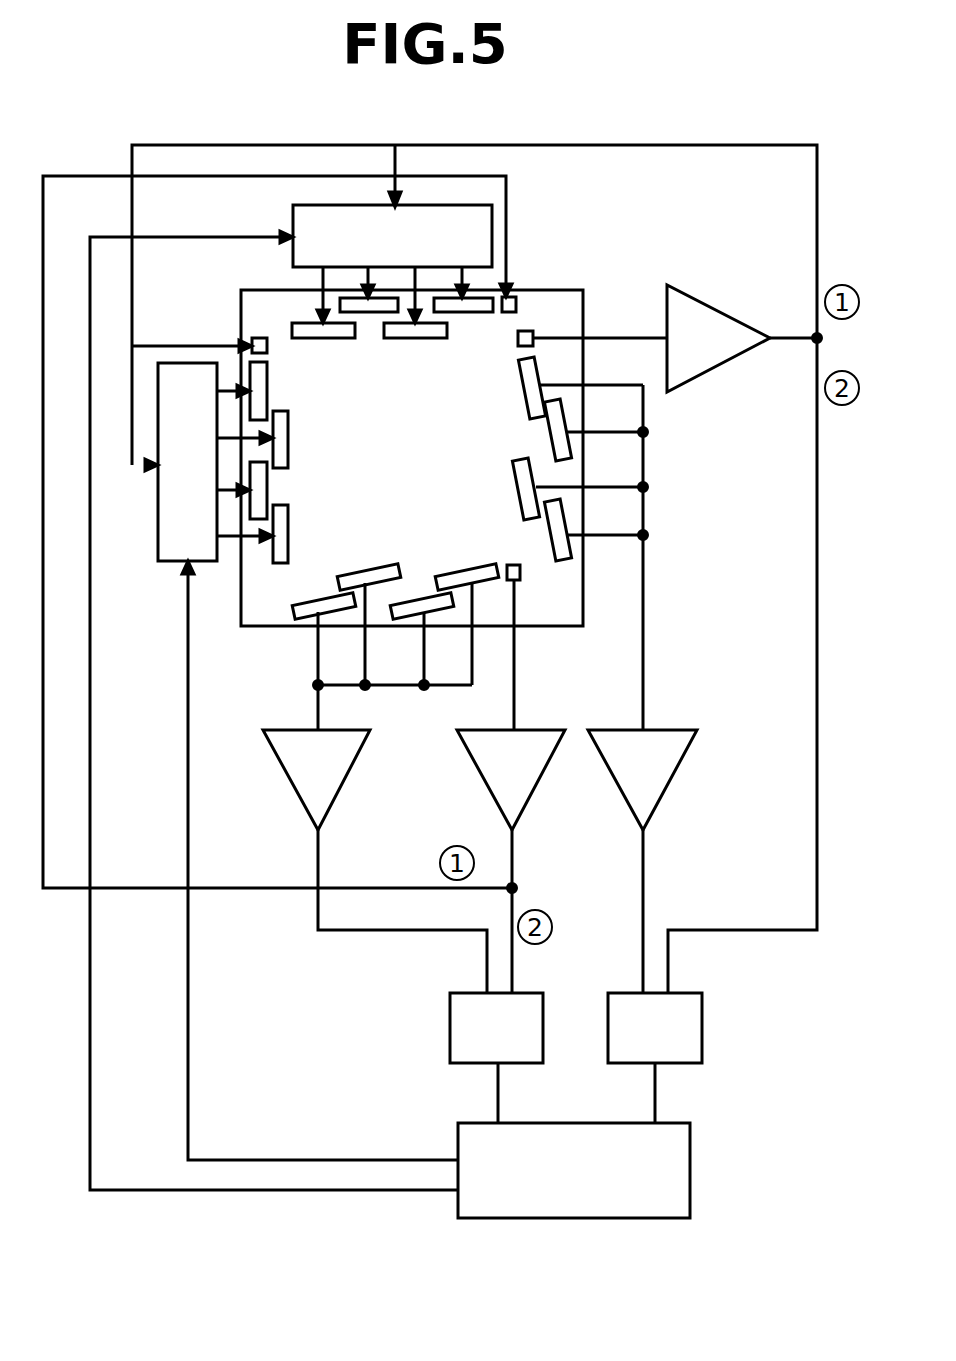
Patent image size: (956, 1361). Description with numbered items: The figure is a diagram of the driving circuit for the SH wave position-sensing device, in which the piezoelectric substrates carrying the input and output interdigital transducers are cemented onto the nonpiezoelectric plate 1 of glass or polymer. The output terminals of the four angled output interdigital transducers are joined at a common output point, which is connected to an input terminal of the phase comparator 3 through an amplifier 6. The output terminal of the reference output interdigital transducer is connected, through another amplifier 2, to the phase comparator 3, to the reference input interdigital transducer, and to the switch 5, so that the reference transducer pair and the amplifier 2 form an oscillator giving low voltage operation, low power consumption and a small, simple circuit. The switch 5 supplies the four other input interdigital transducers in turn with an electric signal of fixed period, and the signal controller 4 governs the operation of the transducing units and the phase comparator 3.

The nonpiezoelectric plate 1 is at (562, 300).
The amplifier 2 is at (613, 557).
The phase comparator 3 is at (576, 1028).
The signal controller 4 is at (574, 1170).
The switch 5 is at (325, 383).
The amplifier 6 is at (480, 780).